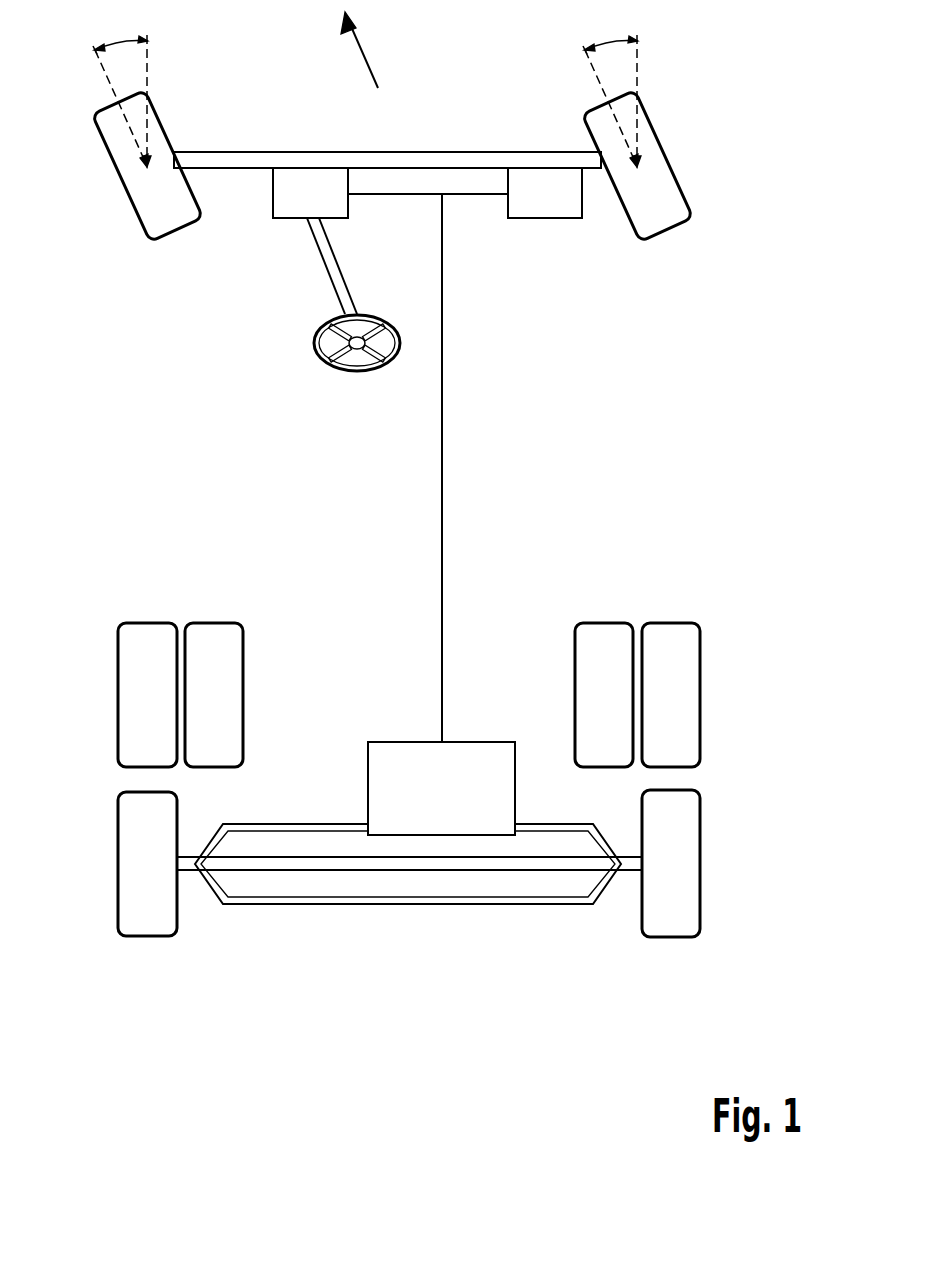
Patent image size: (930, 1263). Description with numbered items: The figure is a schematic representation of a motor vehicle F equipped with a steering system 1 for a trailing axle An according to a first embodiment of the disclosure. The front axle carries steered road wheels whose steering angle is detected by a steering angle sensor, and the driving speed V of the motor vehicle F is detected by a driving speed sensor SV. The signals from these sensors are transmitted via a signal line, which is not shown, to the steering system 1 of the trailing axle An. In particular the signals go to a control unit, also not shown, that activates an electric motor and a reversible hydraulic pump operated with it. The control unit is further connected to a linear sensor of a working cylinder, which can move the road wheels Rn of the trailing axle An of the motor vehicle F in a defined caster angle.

The steering system 1 is at (396, 748).
The driving speed sensor SV is at (558, 209).
The road wheels Rn is at (143, 922).
The trailing axle An is at (412, 897).
The motor vehicle F is at (115, 410).
The driving speed V is at (368, 50).